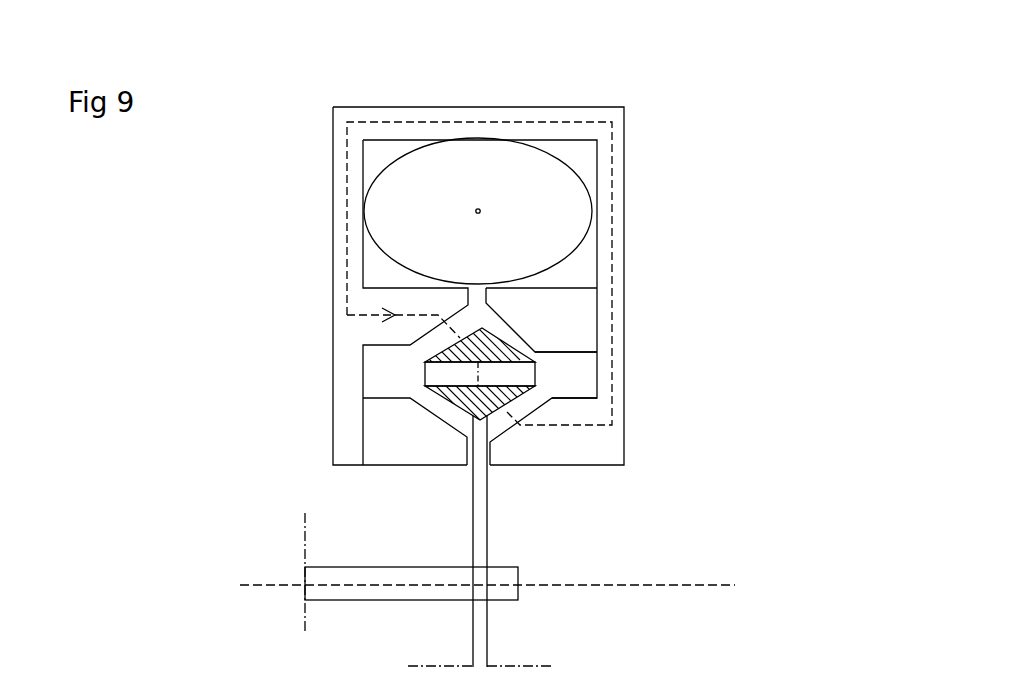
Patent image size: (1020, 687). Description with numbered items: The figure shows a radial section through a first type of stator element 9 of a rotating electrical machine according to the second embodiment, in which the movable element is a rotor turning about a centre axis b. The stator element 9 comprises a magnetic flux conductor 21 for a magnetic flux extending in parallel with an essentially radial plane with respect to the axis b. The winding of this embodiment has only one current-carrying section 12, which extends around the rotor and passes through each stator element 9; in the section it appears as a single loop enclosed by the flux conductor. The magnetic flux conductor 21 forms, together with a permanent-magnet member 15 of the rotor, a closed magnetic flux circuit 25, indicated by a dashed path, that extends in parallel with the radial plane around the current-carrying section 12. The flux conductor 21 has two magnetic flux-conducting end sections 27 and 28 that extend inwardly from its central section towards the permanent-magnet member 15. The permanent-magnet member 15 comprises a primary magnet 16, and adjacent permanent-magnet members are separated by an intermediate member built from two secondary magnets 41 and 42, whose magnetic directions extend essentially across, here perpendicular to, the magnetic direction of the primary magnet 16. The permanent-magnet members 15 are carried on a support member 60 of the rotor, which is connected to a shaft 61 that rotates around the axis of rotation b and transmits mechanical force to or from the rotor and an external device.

The stator element 9 is at (326, 101).
The magnetic flux circuit 25 is at (345, 150).
The magnetic flux conductor 21 is at (340, 173).
The current-carrying section 12 is at (405, 210).
The magnetic flux-conducting end section 27 is at (396, 433).
The magnetic flux-conducting end section 28 is at (750, 504).
The secondary magnet 41 is at (497, 343).
The permanent-magnet member 15 is at (523, 350).
The primary magnet 16 is at (498, 371).
The secondary magnet 42 is at (552, 401).
The support member 60 is at (480, 535).
The shaft 61 is at (393, 577).
The axis of rotation b is at (258, 585).